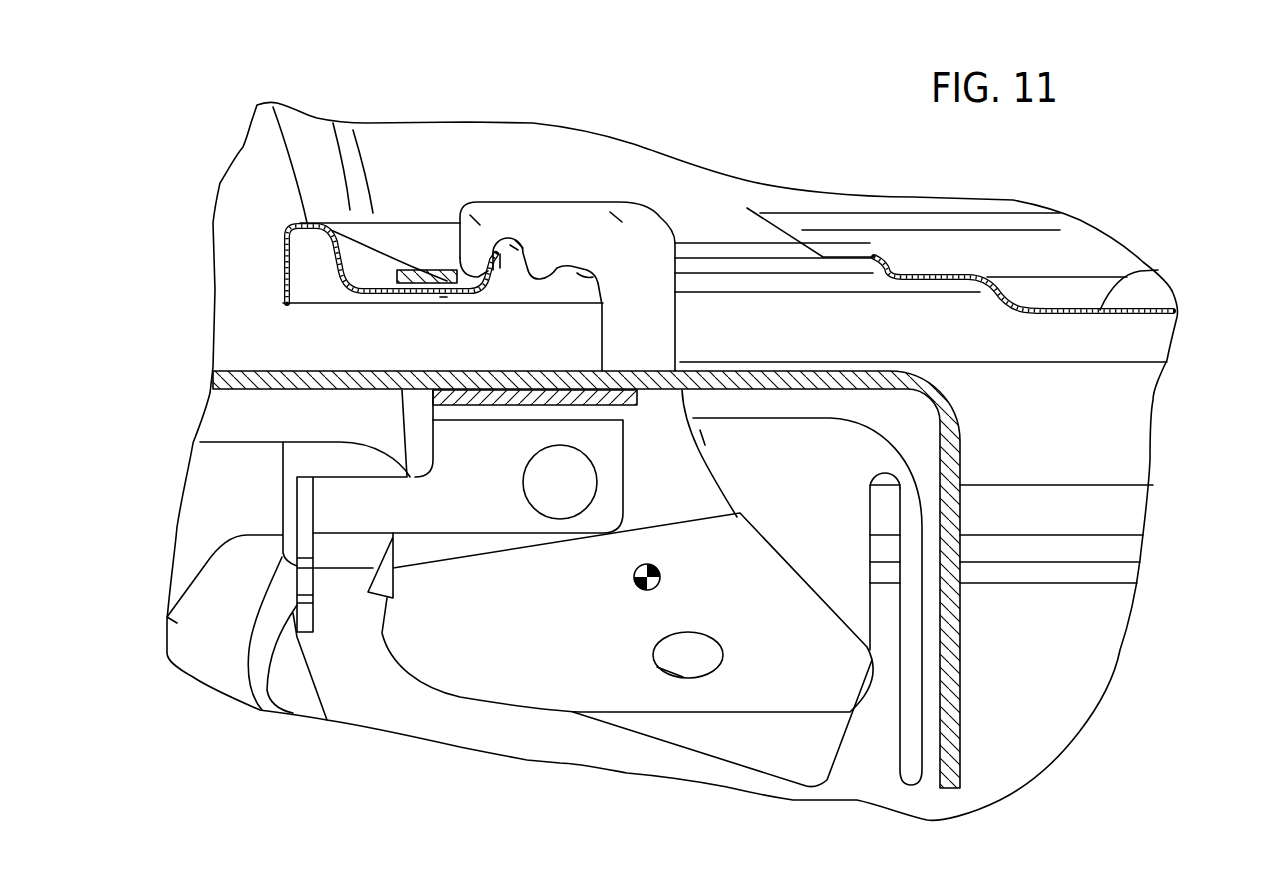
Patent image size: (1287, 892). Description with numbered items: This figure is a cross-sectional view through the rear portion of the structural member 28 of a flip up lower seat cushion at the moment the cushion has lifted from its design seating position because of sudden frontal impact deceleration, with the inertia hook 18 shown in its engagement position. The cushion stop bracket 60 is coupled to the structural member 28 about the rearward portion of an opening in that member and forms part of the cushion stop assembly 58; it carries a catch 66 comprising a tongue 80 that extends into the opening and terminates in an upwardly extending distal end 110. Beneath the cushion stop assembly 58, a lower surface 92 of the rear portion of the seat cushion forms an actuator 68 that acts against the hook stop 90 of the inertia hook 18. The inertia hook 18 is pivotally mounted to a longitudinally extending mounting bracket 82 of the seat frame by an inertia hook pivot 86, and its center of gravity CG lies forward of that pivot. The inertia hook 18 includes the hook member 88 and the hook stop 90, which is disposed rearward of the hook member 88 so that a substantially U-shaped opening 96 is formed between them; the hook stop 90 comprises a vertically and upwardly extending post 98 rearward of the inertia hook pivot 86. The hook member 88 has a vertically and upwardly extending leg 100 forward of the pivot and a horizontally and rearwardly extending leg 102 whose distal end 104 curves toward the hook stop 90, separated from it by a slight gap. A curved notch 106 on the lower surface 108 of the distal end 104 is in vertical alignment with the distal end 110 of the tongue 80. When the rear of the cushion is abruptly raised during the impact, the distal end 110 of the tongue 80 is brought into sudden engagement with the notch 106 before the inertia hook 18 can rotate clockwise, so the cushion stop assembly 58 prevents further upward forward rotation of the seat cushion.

The inertia hook 18 is at (517, 683).
The structural member 28 is at (1160, 287).
The cushion stop assembly 58 is at (398, 280).
The cushion stop bracket 60 is at (413, 283).
The catch 66 is at (480, 278).
The actuator 68 is at (443, 297).
The tongue 80 is at (487, 275).
The mounting bracket 82 is at (950, 443).
The inertia hook pivot 86 is at (573, 500).
The hook member 88 is at (670, 452).
The hook stop 90 is at (417, 432).
The lower surface 92 is at (420, 290).
The U-shaped opening 96 is at (603, 343).
The post 98 is at (510, 392).
The vertically extending leg 100 is at (675, 420).
The horizontally extending leg 102 is at (617, 217).
The distal end 104 is at (478, 223).
The curved notch 106 is at (520, 245).
The lower surface 108 is at (590, 277).
The distal end of tongue 110 is at (515, 247).
The center of gravity CG is at (660, 583).